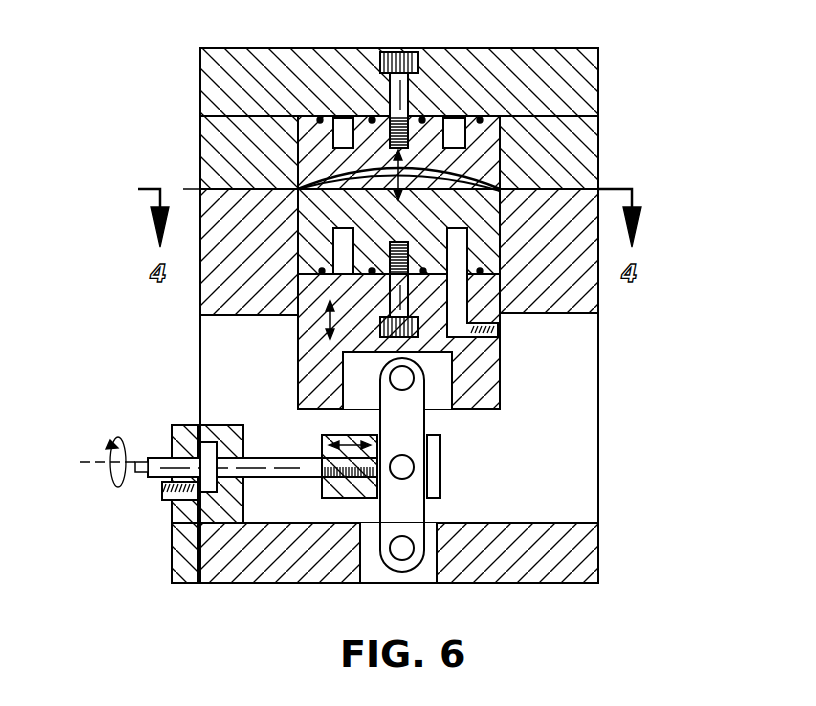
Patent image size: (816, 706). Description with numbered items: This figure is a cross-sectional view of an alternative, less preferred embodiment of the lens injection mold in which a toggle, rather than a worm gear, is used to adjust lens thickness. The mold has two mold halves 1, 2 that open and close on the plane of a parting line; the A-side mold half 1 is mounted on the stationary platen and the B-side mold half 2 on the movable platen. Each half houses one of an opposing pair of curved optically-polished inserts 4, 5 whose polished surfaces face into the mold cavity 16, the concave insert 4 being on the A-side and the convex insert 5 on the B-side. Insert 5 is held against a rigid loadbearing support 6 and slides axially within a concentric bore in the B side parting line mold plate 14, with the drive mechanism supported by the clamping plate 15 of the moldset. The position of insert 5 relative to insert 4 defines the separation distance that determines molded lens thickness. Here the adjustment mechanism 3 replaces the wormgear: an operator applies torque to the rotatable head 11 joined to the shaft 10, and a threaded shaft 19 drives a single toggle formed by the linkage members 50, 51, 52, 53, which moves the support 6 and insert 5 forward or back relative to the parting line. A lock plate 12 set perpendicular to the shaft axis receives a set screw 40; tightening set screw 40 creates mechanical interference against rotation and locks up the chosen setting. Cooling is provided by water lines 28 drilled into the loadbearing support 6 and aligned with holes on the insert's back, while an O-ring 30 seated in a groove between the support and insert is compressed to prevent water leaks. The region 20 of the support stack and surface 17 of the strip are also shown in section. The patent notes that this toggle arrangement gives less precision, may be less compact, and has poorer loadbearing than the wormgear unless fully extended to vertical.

The A-side mold half 1 is at (664, 140).
The B-side mold half 2 is at (672, 243).
The adjustment mechanism 3 is at (118, 383).
The concave-curved optically-polished insert 4 is at (433, 118).
The convex-curve-surfaced insert 5 is at (300, 218).
The loadbearing support member 6 is at (488, 390).
The shaft 10 is at (280, 468).
The rotatable head 11 is at (140, 475).
The lock plate 12 is at (206, 445).
The B side parting line mold plate 14 is at (598, 293).
The clamping plate 15 is at (588, 562).
The mold cavity 16 is at (298, 164).
The lower surface of strip 17 is at (298, 189).
The threaded shaft 19 is at (322, 440).
The lower insert 20 is at (298, 335).
The water lines 28 is at (490, 337).
The O-ring 30 is at (320, 112).
The set screw 40 is at (165, 500).
The toggle assembly member 50 is at (405, 420).
The toggle assembly member 51 is at (433, 482).
The toggle assembly member 52 is at (420, 510).
The toggle assembly member 53 is at (390, 565).